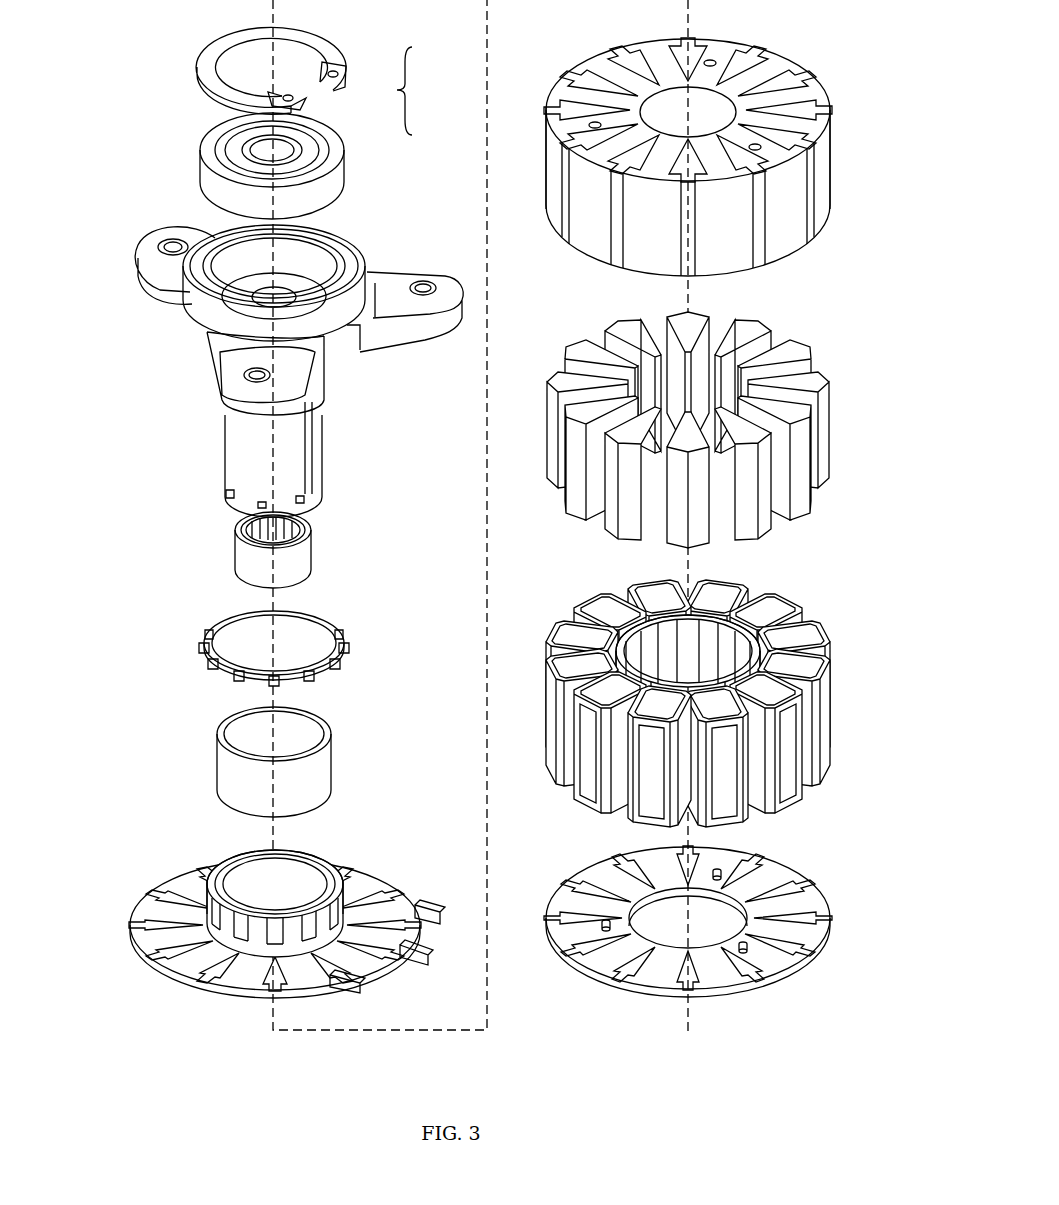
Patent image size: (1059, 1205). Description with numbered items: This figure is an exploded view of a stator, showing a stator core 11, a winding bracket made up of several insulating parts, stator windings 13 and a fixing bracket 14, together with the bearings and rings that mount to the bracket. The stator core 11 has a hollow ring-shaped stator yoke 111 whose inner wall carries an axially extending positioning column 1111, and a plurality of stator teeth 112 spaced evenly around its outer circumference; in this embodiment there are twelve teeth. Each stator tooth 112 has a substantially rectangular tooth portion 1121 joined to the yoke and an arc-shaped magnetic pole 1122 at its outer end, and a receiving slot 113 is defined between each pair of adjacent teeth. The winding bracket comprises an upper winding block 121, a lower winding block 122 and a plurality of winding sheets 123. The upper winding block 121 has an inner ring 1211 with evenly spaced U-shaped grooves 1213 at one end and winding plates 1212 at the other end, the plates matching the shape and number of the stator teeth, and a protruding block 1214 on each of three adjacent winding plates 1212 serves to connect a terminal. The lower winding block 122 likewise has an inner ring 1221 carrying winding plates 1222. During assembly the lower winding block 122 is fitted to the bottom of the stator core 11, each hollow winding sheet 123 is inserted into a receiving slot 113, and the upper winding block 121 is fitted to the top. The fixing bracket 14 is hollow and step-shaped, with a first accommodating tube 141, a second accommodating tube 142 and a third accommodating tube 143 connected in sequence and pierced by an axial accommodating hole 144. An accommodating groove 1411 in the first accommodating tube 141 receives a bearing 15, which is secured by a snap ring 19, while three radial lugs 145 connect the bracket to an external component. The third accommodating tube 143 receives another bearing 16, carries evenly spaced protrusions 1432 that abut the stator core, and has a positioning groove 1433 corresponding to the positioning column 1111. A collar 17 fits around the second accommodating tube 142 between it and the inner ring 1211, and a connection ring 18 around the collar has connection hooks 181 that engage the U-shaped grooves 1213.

The stator core 11 is at (691, 138).
The stator yoke 111 is at (713, 84).
The positioning column 1111 is at (718, 132).
The receiving slot 113 is at (770, 86).
The stator teeth 112 is at (477, 91).
The tooth portion 1121 is at (590, 97).
The magnetic pole 1122 is at (562, 82).
The upper winding block 121 is at (247, 903).
The inner ring 1211 is at (138, 908).
The winding plates 1212 is at (190, 964).
The U-shaped grooves 1213 is at (258, 918).
The protruding block 1214 is at (418, 905).
The lower winding block 122 is at (692, 932).
The inner ring 1221 is at (628, 972).
The winding plates 1222 is at (614, 880).
The winding sheets 123 is at (758, 322).
The stator windings 13 is at (590, 593).
The fixing bracket 14 is at (263, 360).
The first accommodating tube 141 is at (196, 320).
The accommodating groove 1411 is at (230, 281).
The second accommodating tube 142 is at (322, 378).
The third accommodating tube 143 is at (240, 437).
The protrusions 1432 is at (233, 490).
The positioning groove 1433 is at (308, 440).
The accommodating hole 144 is at (263, 311).
The lugs 145 is at (160, 237).
The bearing 15 is at (206, 173).
The bearing 16 is at (243, 558).
The collar 17 is at (230, 773).
The connection ring 18 is at (239, 658).
The connection hooks 181 is at (208, 652).
The snap ring 19 is at (222, 44).